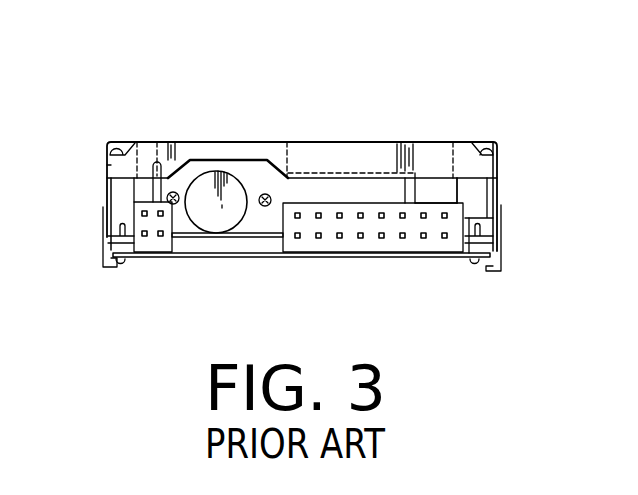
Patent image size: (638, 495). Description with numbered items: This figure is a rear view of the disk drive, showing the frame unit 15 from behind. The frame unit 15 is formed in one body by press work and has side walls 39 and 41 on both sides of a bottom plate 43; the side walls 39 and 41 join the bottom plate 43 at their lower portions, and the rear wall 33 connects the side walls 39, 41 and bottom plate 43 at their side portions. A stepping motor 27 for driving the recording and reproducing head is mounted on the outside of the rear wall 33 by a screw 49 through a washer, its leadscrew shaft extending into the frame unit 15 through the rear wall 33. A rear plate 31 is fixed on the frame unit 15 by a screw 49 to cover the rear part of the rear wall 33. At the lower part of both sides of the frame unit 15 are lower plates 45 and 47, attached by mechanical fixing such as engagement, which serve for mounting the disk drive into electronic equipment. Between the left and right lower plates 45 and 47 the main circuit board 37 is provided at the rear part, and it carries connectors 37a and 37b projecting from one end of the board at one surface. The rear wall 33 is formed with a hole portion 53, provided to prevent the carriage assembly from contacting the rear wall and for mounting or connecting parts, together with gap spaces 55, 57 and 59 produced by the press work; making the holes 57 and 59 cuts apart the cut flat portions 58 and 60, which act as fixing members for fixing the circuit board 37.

The frame unit 15 is at (502, 171).
The stepping motor 27 is at (222, 170).
The rear plate 31 is at (431, 142).
The rear wall 33 is at (266, 170).
The main circuit board 37 is at (285, 258).
The connector 37a is at (369, 241).
The connector 37b is at (156, 253).
The side wall 39 is at (106, 166).
The side wall 41 is at (500, 203).
The bottom plate 43 is at (210, 242).
The lower plate 45 is at (104, 256).
The lower plate 47 is at (501, 266).
The screw 49 is at (174, 192).
The hole portion 53 is at (369, 190).
The gap space 55 is at (151, 178).
The hole 57 is at (122, 190).
The cut flat portion 58 is at (108, 239).
The hole 59 is at (473, 193).
The cut flat portion 60 is at (496, 243).